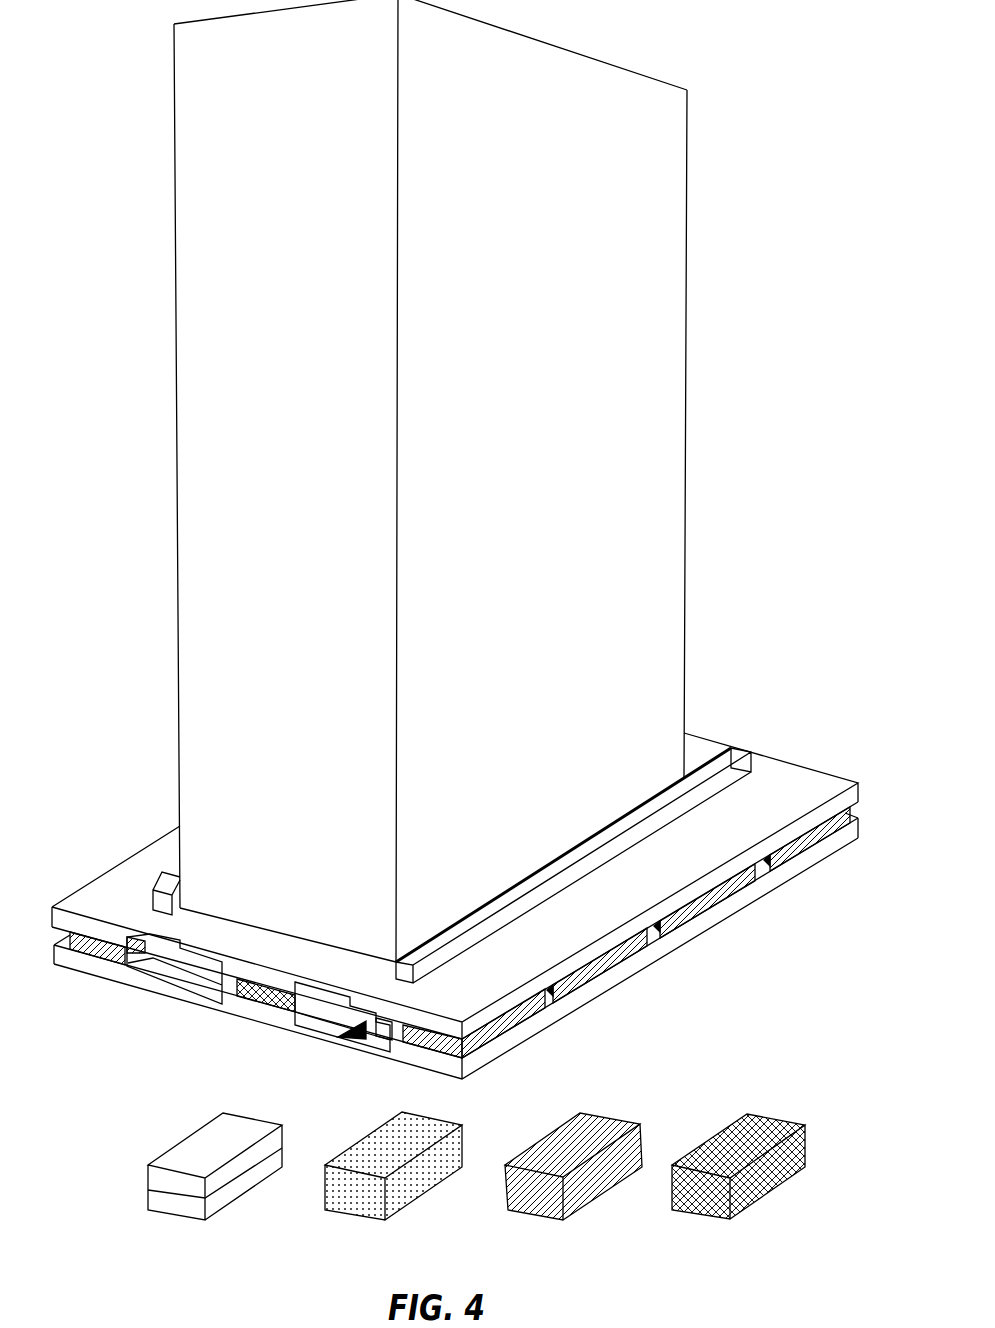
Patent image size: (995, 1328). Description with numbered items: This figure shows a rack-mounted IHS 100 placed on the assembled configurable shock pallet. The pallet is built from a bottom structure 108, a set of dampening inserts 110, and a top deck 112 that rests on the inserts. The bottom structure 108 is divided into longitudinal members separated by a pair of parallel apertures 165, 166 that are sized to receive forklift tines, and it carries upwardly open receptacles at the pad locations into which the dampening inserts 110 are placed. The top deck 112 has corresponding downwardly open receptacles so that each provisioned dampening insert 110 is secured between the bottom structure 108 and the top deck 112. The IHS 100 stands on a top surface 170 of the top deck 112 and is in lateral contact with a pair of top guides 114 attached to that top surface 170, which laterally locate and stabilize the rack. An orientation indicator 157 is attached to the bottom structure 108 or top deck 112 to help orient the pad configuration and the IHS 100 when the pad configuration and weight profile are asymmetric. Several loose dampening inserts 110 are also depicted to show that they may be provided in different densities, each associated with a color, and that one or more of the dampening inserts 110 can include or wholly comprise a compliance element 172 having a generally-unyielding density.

The IHS 100 is at (685, 318).
The bottom structure 108 is at (777, 893).
The dampening inserts 110 is at (460, 1044).
The top deck 112 is at (795, 763).
The guides 114 is at (722, 752).
The orientation indicator 157 is at (330, 1022).
The aperture 165 is at (173, 987).
The aperture 166 is at (388, 1038).
The top surface 170 is at (102, 898).
The compliance element 172 is at (175, 1203).